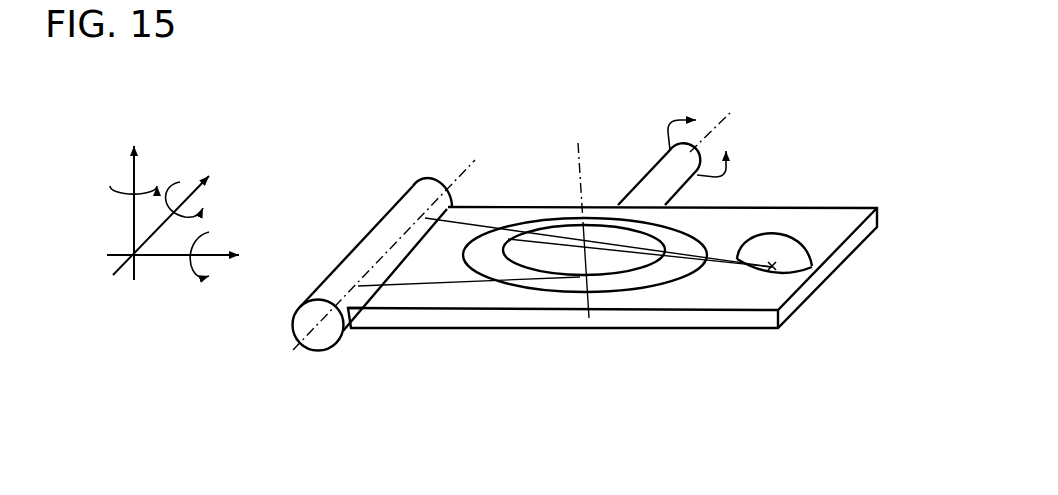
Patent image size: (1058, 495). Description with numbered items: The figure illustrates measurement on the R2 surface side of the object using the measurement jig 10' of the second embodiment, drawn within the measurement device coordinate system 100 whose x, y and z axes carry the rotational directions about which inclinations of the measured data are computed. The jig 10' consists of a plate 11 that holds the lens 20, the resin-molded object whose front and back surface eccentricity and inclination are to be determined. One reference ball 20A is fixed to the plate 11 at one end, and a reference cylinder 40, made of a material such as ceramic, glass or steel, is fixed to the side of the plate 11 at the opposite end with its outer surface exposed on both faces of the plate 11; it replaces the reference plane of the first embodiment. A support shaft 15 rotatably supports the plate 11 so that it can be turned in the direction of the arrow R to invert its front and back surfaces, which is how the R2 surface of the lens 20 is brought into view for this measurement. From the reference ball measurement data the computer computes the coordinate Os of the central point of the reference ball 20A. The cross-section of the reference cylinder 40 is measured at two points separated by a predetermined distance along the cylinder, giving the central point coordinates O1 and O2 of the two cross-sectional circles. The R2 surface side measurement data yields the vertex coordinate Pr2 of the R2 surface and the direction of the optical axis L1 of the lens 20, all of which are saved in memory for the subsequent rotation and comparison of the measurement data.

The measurement device coordinate system 100 is at (178, 218).
The measurement jig 10' is at (614, 205).
The plate 11 is at (838, 218).
The reference cylinder 40 is at (414, 183).
The central point coordinate of first cross-sectional circle O1 is at (421, 213).
The central point coordinate of second cross-sectional circle O2 is at (356, 285).
The lens 20 is at (557, 221).
The R2 surface R2 is at (610, 254).
The vertex coordinate of the R2 surface side Pr2 is at (582, 220).
The optical axis L1 is at (592, 210).
The support shaft 15 is at (650, 177).
The rotation direction R is at (697, 133).
The reference ball 20A is at (774, 230).
The central point coordinate of the reference ball Os is at (777, 270).